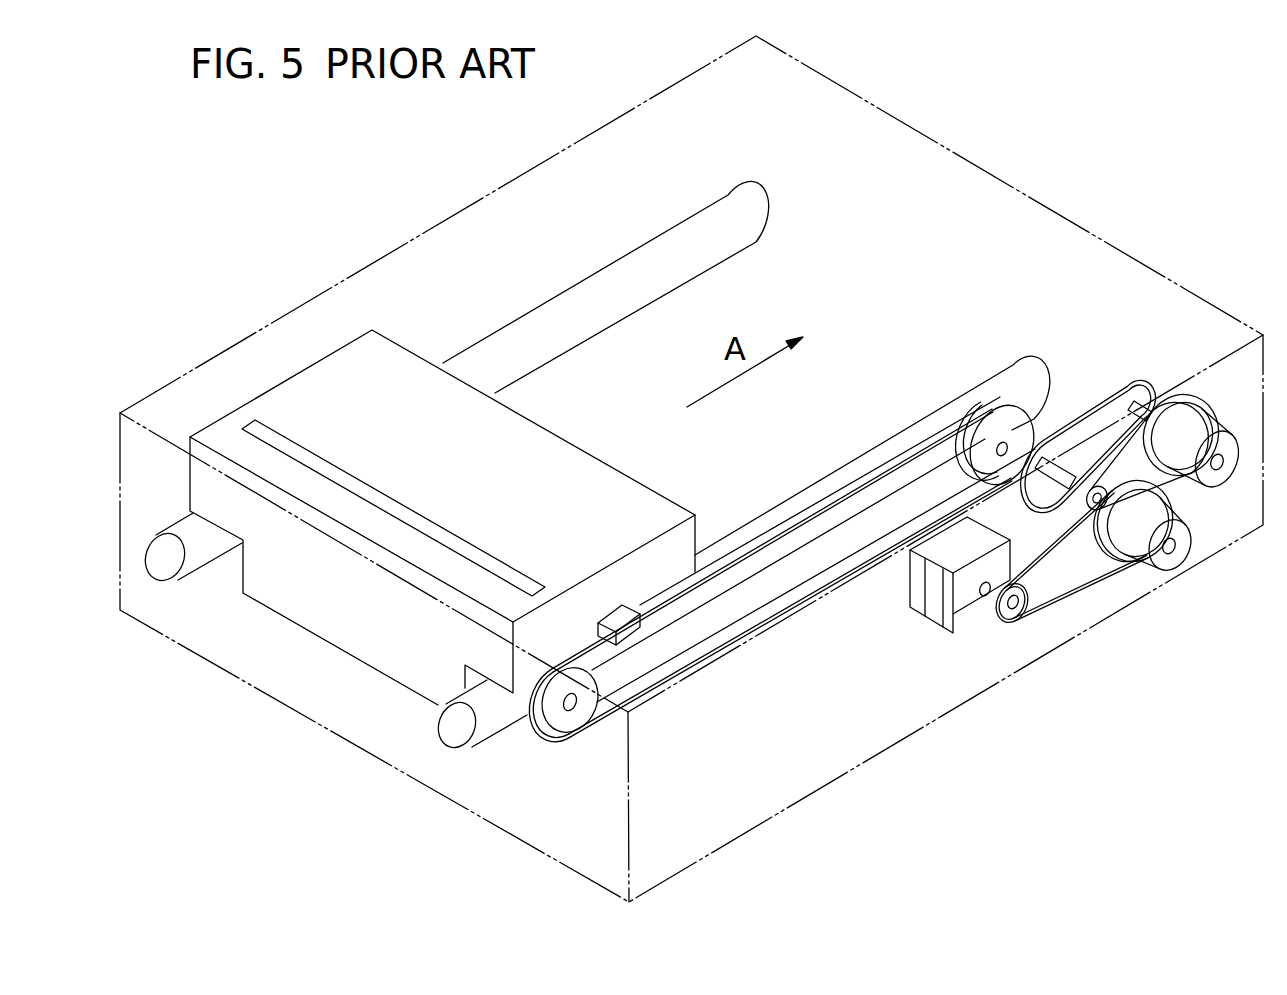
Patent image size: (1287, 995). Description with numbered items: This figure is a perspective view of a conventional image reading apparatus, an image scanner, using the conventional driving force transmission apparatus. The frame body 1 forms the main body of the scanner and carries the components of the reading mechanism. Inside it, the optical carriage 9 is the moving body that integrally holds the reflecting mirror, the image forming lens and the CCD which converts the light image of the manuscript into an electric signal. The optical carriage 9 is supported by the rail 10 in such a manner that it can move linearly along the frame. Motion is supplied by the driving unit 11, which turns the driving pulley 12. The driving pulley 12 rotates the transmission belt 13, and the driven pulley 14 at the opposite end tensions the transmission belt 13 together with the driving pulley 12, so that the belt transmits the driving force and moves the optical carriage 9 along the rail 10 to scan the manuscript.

The frame body 1 is at (575, 142).
The optical carriage 9 is at (322, 383).
The rail 10 is at (455, 730).
The driving unit 11 is at (1123, 557).
The driving pulley 12 is at (1010, 428).
The transmission belt 13 is at (658, 677).
The driven pulley 14 is at (553, 720).